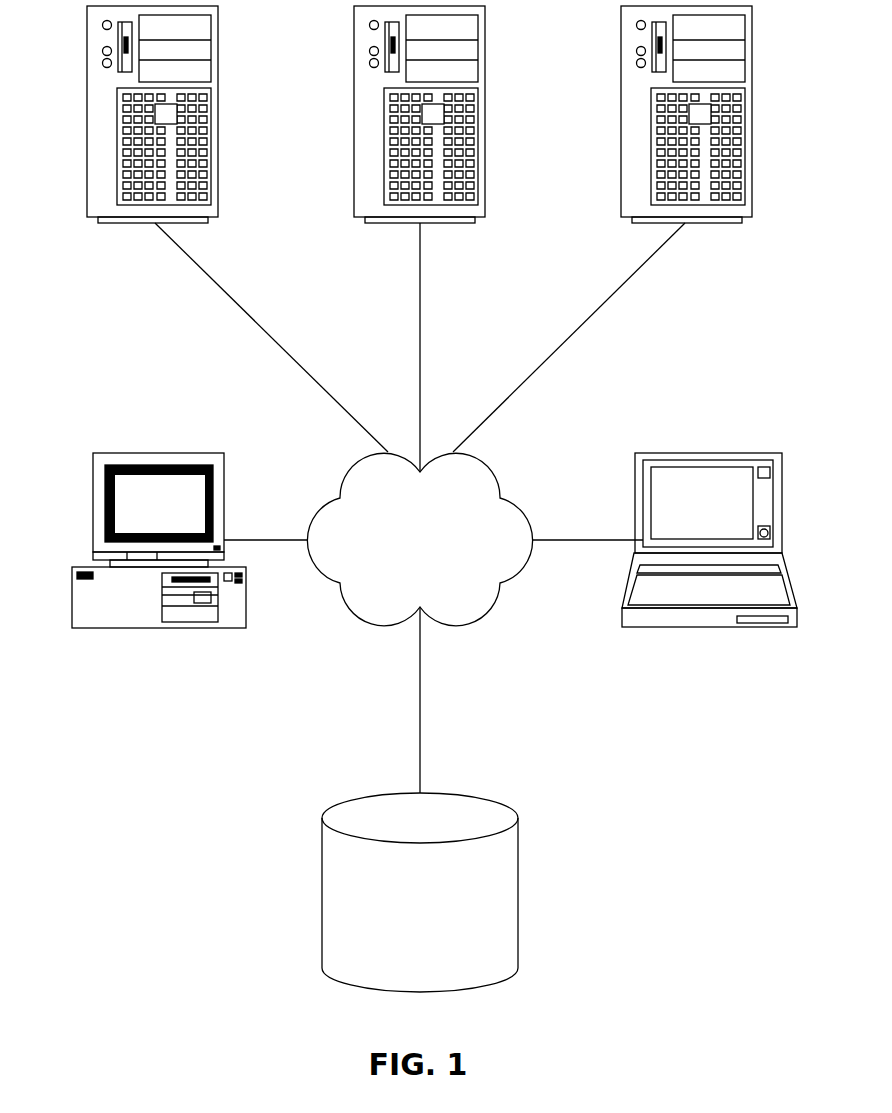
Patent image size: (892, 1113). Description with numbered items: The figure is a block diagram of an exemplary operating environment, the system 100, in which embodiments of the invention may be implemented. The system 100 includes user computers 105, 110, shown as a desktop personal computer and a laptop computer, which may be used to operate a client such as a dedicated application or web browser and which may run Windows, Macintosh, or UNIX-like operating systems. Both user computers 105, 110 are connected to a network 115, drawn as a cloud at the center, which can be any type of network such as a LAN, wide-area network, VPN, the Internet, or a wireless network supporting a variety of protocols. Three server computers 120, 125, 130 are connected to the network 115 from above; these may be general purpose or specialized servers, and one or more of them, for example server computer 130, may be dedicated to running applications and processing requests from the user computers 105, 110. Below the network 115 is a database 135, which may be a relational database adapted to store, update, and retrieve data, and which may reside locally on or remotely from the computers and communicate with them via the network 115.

The system 100 is at (250, 750).
The user computer 105 is at (232, 628).
The user computer 110 is at (748, 627).
The network 115 is at (487, 608).
The server computer 120 is at (199, 223).
The server computer 125 is at (467, 223).
The server computer 130 is at (733, 223).
The database 135 is at (487, 985).